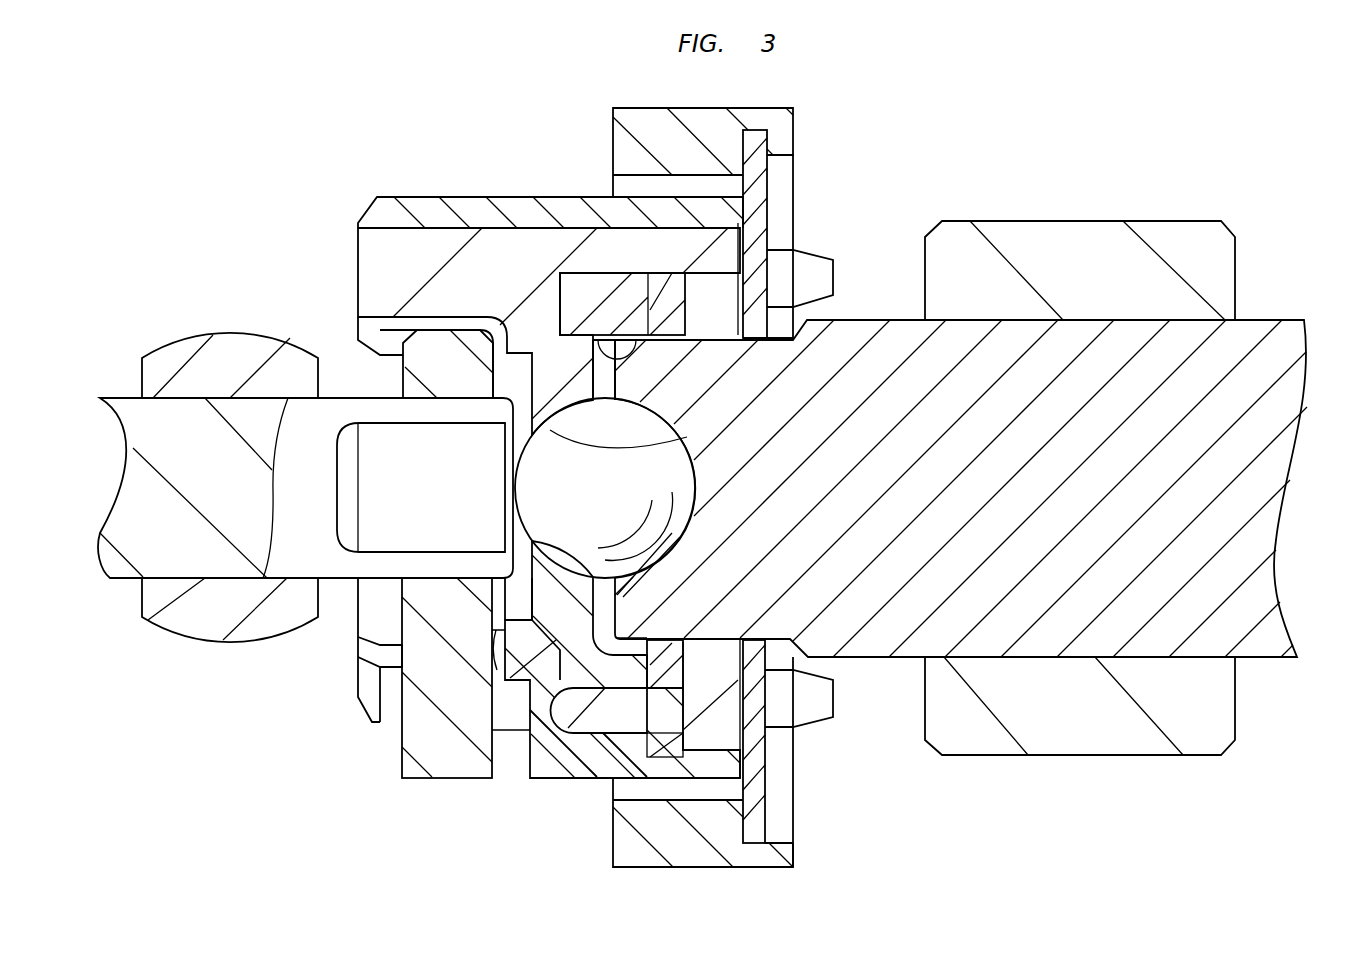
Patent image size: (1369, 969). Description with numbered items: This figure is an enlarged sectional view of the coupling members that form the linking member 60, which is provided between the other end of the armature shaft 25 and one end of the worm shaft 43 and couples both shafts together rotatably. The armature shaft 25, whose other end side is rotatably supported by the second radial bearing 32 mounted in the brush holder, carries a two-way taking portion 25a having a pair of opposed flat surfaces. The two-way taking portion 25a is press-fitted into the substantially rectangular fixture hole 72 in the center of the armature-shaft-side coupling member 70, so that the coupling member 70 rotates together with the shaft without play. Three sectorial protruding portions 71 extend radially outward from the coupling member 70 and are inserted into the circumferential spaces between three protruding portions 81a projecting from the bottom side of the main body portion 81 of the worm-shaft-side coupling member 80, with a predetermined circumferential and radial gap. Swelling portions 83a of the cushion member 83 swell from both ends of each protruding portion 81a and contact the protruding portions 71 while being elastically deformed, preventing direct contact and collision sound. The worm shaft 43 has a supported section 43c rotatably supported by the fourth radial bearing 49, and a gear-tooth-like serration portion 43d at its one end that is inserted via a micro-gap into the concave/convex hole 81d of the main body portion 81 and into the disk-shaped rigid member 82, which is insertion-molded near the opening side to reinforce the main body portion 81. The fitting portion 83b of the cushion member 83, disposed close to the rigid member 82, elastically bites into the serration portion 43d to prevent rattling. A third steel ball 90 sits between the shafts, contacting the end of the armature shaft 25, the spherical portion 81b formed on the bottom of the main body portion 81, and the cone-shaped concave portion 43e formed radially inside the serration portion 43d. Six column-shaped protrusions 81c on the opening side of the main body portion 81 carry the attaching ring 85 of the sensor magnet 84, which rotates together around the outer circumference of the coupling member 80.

The armature shaft 25 is at (188, 445).
The two-way taking portion 25a is at (427, 505).
The second radial bearing 32 is at (200, 613).
The worm shaft 43 is at (1188, 572).
The supported section 43c is at (1272, 316).
The serration portion 43d is at (752, 640).
The concave portion 43e is at (685, 490).
The fourth radial bearing 49 is at (1065, 709).
The linking member 60 is at (472, 158).
The armature-shaft-side coupling member 70 is at (430, 348).
The protruding portion 71 is at (438, 743).
The fixture hole 72 is at (470, 566).
The worm-shaft-side coupling member 80 is at (516, 185).
The main body portion 81 is at (562, 760).
The protruding portion 81a is at (430, 213).
The spherical portion 81b is at (640, 450).
The protrusion 81c is at (813, 277).
The concave/convex hole 81d is at (597, 340).
The rigid member 82 is at (667, 307).
The cushion member 83 is at (383, 268).
The swelling portion 83a is at (380, 332).
The fitting portion 83b is at (707, 338).
The sensor magnet 84 is at (780, 123).
The attaching ring 85 is at (757, 200).
The third steel ball 90 is at (620, 480).